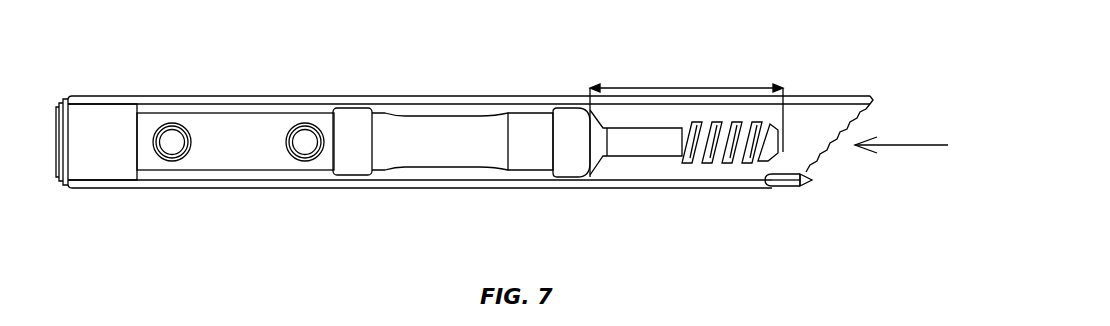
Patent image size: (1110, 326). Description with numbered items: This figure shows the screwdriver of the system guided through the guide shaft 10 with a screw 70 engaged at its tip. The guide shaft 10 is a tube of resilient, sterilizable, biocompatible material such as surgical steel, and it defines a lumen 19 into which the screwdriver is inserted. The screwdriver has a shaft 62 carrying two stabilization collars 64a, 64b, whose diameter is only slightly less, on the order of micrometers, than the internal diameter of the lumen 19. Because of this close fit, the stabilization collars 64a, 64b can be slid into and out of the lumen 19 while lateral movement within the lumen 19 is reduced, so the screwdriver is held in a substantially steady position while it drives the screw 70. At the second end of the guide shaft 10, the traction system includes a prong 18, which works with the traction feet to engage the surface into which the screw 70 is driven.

The guide shaft 10 is at (422, 97).
The stabilization collar 64a is at (112, 128).
The stabilization collar 64b is at (348, 130).
The shaft 62 is at (237, 147).
The screw 70 is at (683, 88).
The lumen 19 is at (913, 146).
The prong 18 is at (810, 182).